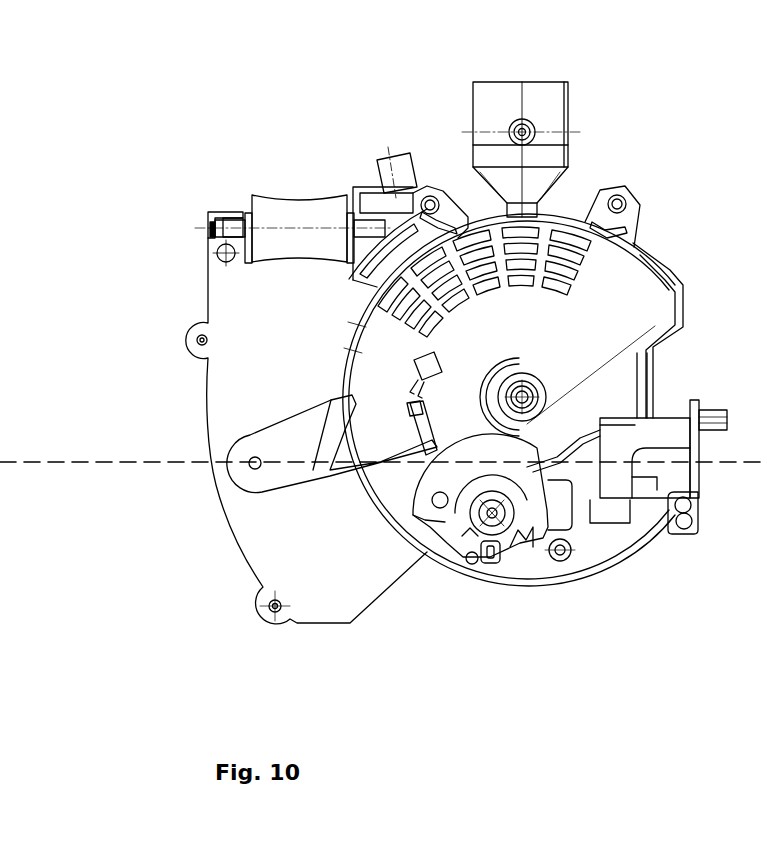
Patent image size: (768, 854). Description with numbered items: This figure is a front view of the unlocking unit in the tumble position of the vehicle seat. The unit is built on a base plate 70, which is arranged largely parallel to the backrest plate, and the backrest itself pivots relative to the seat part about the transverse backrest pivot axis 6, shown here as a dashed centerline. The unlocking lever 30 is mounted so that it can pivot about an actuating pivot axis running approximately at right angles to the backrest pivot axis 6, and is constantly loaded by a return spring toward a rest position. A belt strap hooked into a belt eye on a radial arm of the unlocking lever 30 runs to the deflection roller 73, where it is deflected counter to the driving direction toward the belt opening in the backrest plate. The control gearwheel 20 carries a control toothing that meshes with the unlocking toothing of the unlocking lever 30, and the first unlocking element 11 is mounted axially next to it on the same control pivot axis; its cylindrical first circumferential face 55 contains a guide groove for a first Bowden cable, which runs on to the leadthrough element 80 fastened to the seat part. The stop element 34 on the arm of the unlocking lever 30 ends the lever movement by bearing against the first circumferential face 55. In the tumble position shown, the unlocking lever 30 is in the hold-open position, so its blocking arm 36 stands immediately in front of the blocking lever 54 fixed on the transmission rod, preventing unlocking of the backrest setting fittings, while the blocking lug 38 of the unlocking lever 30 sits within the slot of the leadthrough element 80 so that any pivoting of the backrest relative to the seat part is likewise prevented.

The backrest pivot axis 6 is at (173, 462).
The first unlocking element 11 is at (508, 478).
The control gearwheel 20 is at (510, 547).
The unlocking lever 30 is at (508, 318).
The stop element 34 is at (430, 432).
The blocking arm 36 is at (518, 243).
The blocking lug 38 is at (620, 407).
The blocking lever 54 is at (530, 182).
The first circumferential face 55 is at (405, 472).
The base plate 70 is at (238, 308).
The deflection roller 73 is at (313, 217).
The leadthrough element 80 is at (615, 478).